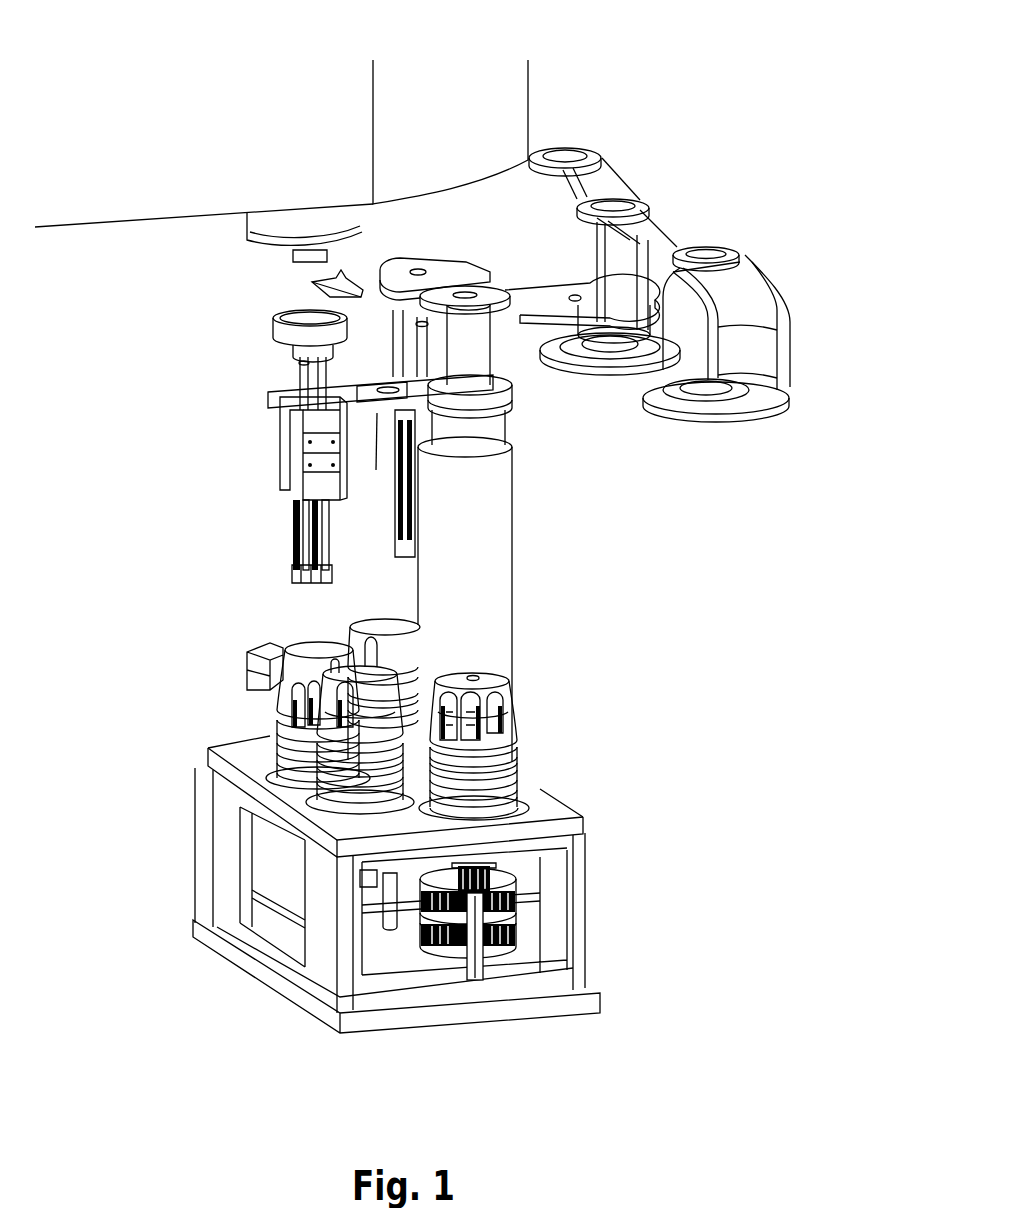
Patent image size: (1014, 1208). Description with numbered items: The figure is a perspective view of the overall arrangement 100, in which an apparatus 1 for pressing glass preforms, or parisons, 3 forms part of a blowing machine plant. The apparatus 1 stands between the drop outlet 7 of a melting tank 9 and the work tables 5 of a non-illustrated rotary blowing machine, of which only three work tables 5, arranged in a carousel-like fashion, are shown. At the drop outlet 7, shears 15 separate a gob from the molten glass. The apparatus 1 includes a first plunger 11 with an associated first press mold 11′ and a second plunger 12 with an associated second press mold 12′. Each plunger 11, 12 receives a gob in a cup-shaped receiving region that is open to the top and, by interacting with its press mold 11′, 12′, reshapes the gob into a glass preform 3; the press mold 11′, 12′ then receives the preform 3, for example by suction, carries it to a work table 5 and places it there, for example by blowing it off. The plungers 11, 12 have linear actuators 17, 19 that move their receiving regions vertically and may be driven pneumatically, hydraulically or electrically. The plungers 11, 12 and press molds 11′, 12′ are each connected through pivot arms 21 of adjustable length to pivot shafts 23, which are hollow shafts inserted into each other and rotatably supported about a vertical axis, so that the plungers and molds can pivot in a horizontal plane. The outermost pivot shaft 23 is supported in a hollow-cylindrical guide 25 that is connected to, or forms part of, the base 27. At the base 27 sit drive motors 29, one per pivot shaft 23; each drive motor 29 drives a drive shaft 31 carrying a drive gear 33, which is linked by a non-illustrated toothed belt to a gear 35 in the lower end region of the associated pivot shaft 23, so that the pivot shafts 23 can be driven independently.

The system 100 is at (714, 28).
The apparatus 1 is at (673, 609).
The glass preform 3 is at (700, 393).
The work table 5 is at (770, 411).
The drop outlet 7 is at (330, 254).
The melting tank 9 is at (240, 102).
The first plunger 11 is at (275, 369).
The first press mold 11′ is at (555, 341).
The second plunger 12 is at (405, 276).
The second press mold 12′ is at (440, 262).
The shears 15 is at (346, 280).
The linear actuator 17 is at (288, 508).
The linear actuator 19 is at (393, 374).
The pivot arm 21 is at (407, 412).
The pivot shaft 23 is at (473, 429).
The hollow-cylindrical guide 25 is at (473, 556).
The base 27 is at (550, 800).
The drive motor 29 is at (498, 742).
The drive shaft 31 is at (476, 956).
The drive gear 33 is at (447, 958).
The gear 35 is at (513, 868).